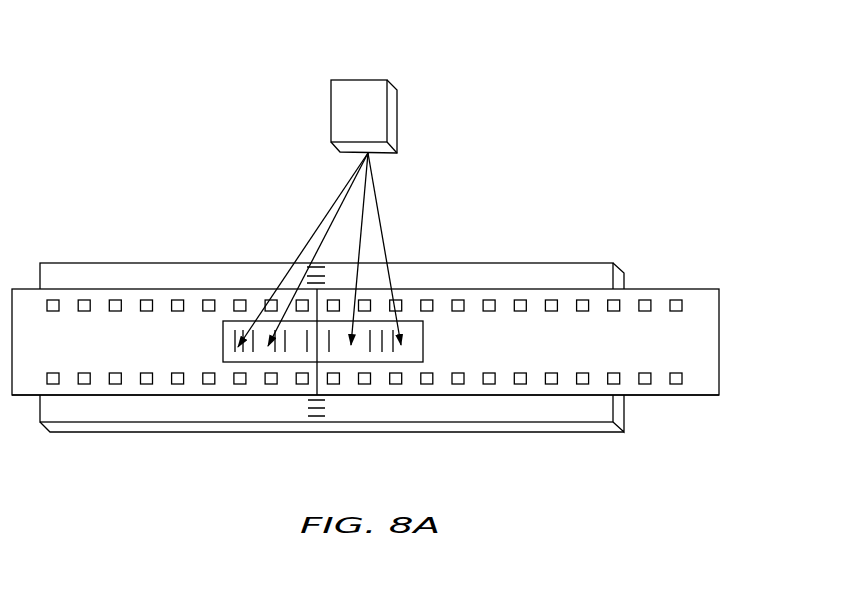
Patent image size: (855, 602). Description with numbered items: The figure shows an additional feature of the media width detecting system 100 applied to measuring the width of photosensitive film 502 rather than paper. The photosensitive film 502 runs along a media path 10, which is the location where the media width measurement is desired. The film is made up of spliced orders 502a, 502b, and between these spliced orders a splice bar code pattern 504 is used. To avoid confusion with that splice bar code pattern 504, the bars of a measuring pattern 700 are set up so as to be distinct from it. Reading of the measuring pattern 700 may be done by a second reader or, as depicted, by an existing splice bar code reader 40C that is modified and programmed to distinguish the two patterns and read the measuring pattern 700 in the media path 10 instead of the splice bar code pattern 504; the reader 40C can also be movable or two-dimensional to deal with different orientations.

The media width detecting system 100 is at (420, 81).
The splice bar code reader 40C is at (397, 118).
The photosensitive film 502 is at (498, 286).
The media path 10 is at (576, 257).
The splice bar code pattern 504 is at (221, 316).
The spliced order 502a is at (148, 395).
The spliced order 502b is at (657, 395).
The measuring pattern 700 is at (327, 408).